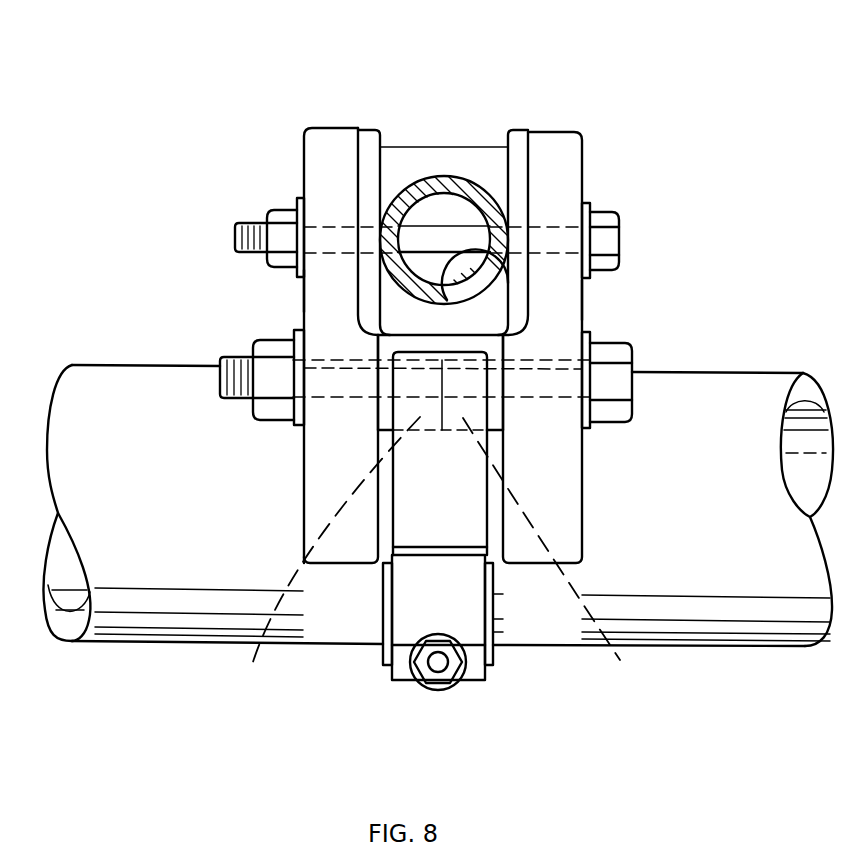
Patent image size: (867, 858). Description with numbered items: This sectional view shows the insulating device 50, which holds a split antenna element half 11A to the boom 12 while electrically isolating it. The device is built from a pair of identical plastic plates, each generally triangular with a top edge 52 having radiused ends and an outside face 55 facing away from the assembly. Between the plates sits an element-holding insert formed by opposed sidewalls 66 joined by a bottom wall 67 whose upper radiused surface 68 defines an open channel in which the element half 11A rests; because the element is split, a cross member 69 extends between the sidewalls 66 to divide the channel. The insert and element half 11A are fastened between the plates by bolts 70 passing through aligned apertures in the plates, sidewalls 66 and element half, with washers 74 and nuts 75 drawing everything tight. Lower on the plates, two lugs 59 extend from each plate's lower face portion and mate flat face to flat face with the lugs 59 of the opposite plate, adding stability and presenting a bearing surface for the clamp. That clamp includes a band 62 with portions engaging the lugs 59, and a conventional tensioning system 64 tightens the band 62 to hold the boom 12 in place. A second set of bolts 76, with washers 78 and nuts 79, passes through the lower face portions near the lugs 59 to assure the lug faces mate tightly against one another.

The element half 11A is at (437, 188).
The boom 12 is at (214, 627).
The insulating device 50 is at (594, 135).
The top edge 52 is at (325, 128).
The outside face 55 is at (304, 291).
The lugs 59 is at (433, 565).
The band 62 is at (417, 520).
The tensioning system 64 is at (467, 622).
The sidewalls 66 is at (380, 170).
The bottom wall 67 is at (415, 335).
The radiused surface 68 is at (487, 260).
The cross member 69 is at (468, 160).
The bolts 70 is at (610, 238).
The washers 74 is at (298, 198).
The nuts 75 is at (268, 210).
The bolts 76 is at (622, 353).
The washers 78 is at (297, 427).
The nuts 79 is at (272, 348).